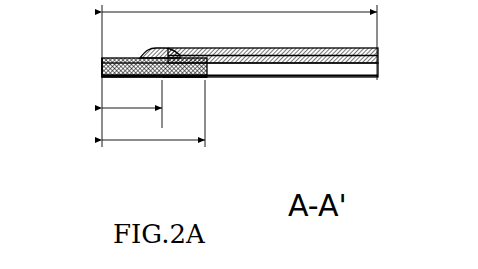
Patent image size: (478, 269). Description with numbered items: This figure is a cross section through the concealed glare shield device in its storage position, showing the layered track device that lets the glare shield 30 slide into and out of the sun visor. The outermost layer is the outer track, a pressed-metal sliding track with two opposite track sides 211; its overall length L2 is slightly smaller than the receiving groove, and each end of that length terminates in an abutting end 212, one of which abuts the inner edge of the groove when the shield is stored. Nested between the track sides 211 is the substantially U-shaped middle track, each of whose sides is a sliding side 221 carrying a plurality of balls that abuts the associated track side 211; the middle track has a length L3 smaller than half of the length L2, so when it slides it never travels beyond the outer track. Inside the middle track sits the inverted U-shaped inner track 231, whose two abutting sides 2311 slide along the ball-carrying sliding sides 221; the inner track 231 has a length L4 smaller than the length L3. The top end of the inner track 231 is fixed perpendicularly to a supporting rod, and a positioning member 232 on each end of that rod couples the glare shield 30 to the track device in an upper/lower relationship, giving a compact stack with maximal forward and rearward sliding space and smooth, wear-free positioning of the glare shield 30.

The glare shield 30 is at (241, 69).
The track side 211 is at (368, 78).
The abutting end 212 is at (380, 60).
The sliding side 221 is at (182, 80).
The inner track 231 is at (154, 67).
The abutting side 2311 is at (101, 82).
The positioning member 232 is at (147, 55).
The length of outer track L2 is at (239, 76).
The length of middle track L3 is at (153, 119).
The length of inner track L4 is at (132, 104).